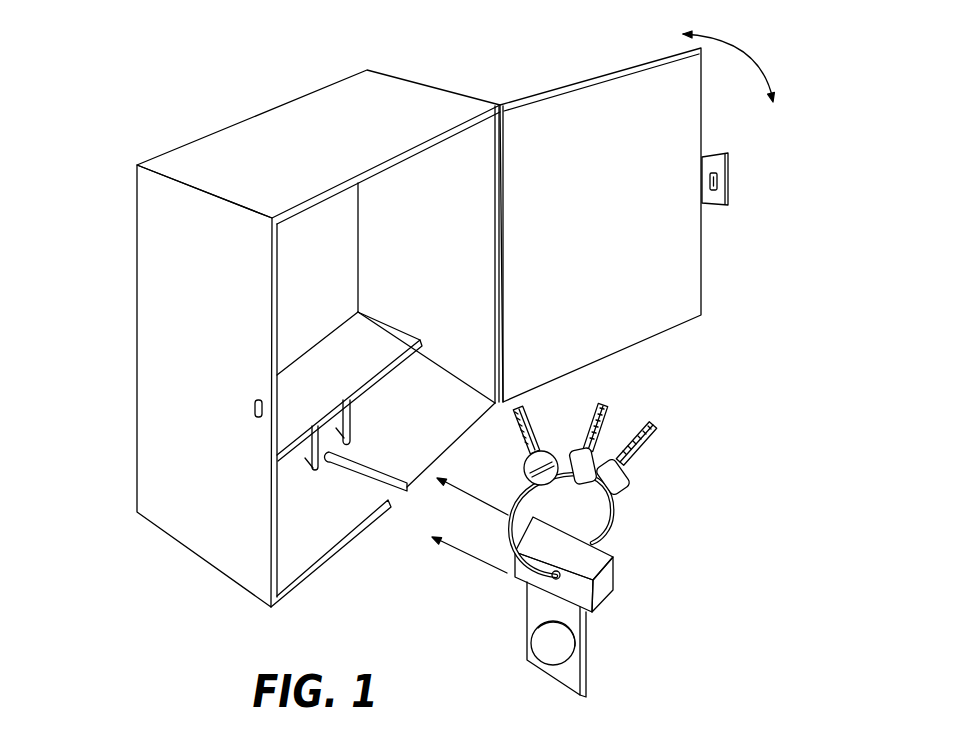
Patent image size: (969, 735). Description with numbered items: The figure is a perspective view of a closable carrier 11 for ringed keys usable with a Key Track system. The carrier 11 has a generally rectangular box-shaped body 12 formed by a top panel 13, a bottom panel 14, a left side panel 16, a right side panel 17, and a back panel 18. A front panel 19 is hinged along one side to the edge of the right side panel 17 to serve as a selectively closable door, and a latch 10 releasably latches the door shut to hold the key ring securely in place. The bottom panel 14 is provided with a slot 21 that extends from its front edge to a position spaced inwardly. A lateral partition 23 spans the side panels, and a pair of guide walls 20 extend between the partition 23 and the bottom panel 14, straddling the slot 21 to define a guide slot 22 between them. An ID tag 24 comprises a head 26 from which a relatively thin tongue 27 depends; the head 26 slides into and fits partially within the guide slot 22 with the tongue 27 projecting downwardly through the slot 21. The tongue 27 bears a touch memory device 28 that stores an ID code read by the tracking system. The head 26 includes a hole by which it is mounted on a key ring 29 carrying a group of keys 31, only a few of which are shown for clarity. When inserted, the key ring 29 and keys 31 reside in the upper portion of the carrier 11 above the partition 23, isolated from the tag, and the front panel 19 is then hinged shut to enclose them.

The latch 10 is at (746, 190).
The carrier 11 is at (86, 163).
The body 12 is at (234, 99).
The top panel 13 is at (325, 118).
The bottom panel 14 is at (282, 565).
The left side panel 16 is at (160, 358).
The right side panel 17 is at (477, 140).
The back panel 18 is at (331, 225).
The front panel 19 is at (567, 117).
The guide walls 20 is at (340, 433).
The slot 21 is at (395, 490).
The guide slot 22 is at (340, 422).
The lateral partition 23 is at (313, 377).
The ID tag 24 is at (612, 633).
The head 26 is at (473, 497).
The tongue 27 is at (533, 598).
The touch memory device 28 is at (553, 647).
The key ring 29 is at (634, 503).
The keys 31 is at (515, 405).